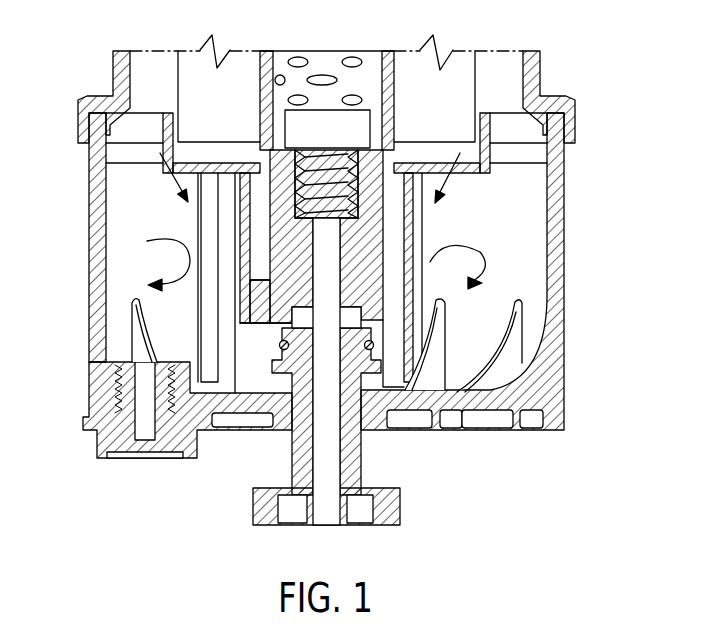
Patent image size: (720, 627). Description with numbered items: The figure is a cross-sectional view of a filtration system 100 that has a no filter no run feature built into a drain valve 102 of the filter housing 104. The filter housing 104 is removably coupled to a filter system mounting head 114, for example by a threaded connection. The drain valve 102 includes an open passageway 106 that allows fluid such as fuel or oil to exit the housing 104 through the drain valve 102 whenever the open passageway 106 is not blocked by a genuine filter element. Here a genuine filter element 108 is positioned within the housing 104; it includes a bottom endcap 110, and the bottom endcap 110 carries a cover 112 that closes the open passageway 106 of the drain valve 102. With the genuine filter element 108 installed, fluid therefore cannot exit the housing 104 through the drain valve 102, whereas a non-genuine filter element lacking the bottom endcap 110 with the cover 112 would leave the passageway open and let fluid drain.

The filtration system 100 is at (608, 46).
The drain valve 102 is at (358, 443).
The filter housing 104 is at (558, 250).
The open passageway 106 is at (328, 512).
The genuine filter element 108 is at (446, 80).
The bottom endcap 110 is at (493, 163).
The cover 112 is at (277, 244).
The filter system mounting head 114 is at (83, 105).